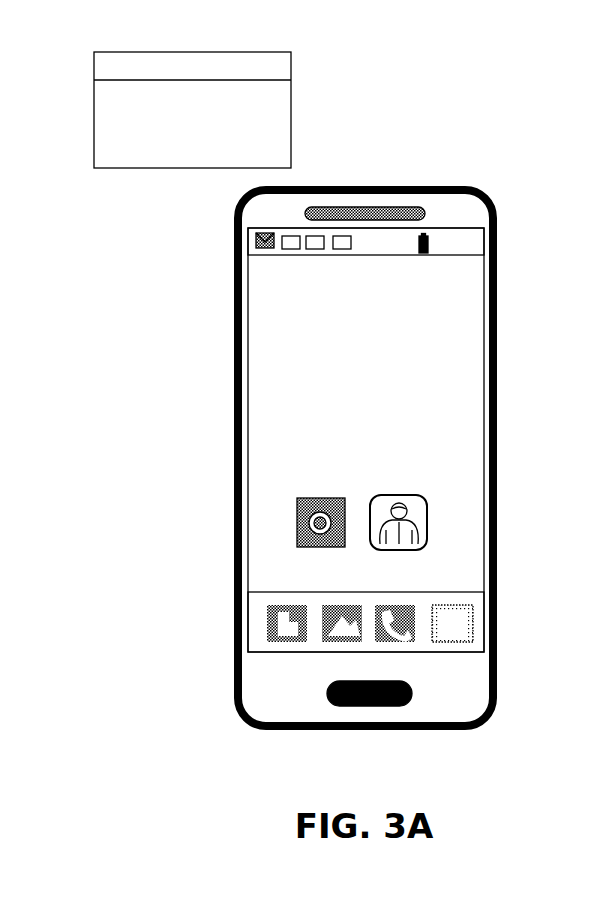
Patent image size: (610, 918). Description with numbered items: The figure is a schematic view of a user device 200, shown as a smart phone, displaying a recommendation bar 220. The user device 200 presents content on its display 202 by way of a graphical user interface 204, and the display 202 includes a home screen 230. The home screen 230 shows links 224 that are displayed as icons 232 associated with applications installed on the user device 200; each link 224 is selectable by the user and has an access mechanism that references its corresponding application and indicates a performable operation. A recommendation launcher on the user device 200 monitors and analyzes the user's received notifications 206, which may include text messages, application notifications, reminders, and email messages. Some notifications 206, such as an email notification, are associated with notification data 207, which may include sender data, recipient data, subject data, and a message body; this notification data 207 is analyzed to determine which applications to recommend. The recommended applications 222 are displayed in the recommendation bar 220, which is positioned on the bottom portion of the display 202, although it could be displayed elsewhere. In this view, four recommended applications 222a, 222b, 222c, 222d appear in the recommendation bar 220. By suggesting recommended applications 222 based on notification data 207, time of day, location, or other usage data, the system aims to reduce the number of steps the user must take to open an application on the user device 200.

The user device 200 is at (366, 188).
The display 202 is at (455, 228).
The graphical user interface 204 is at (258, 326).
The notifications 206 is at (342, 249).
The notification data 207 is at (200, 172).
The recommendation bar 220 is at (214, 652).
The recommended applications 222 is at (419, 690).
The recommended application 222a is at (288, 643).
The recommended application 222b is at (332, 643).
The recommended application 222c is at (407, 643).
The recommended application 222d is at (474, 622).
The links 224 is at (275, 605).
The home screen 230 is at (357, 355).
The icons 232 is at (400, 497).